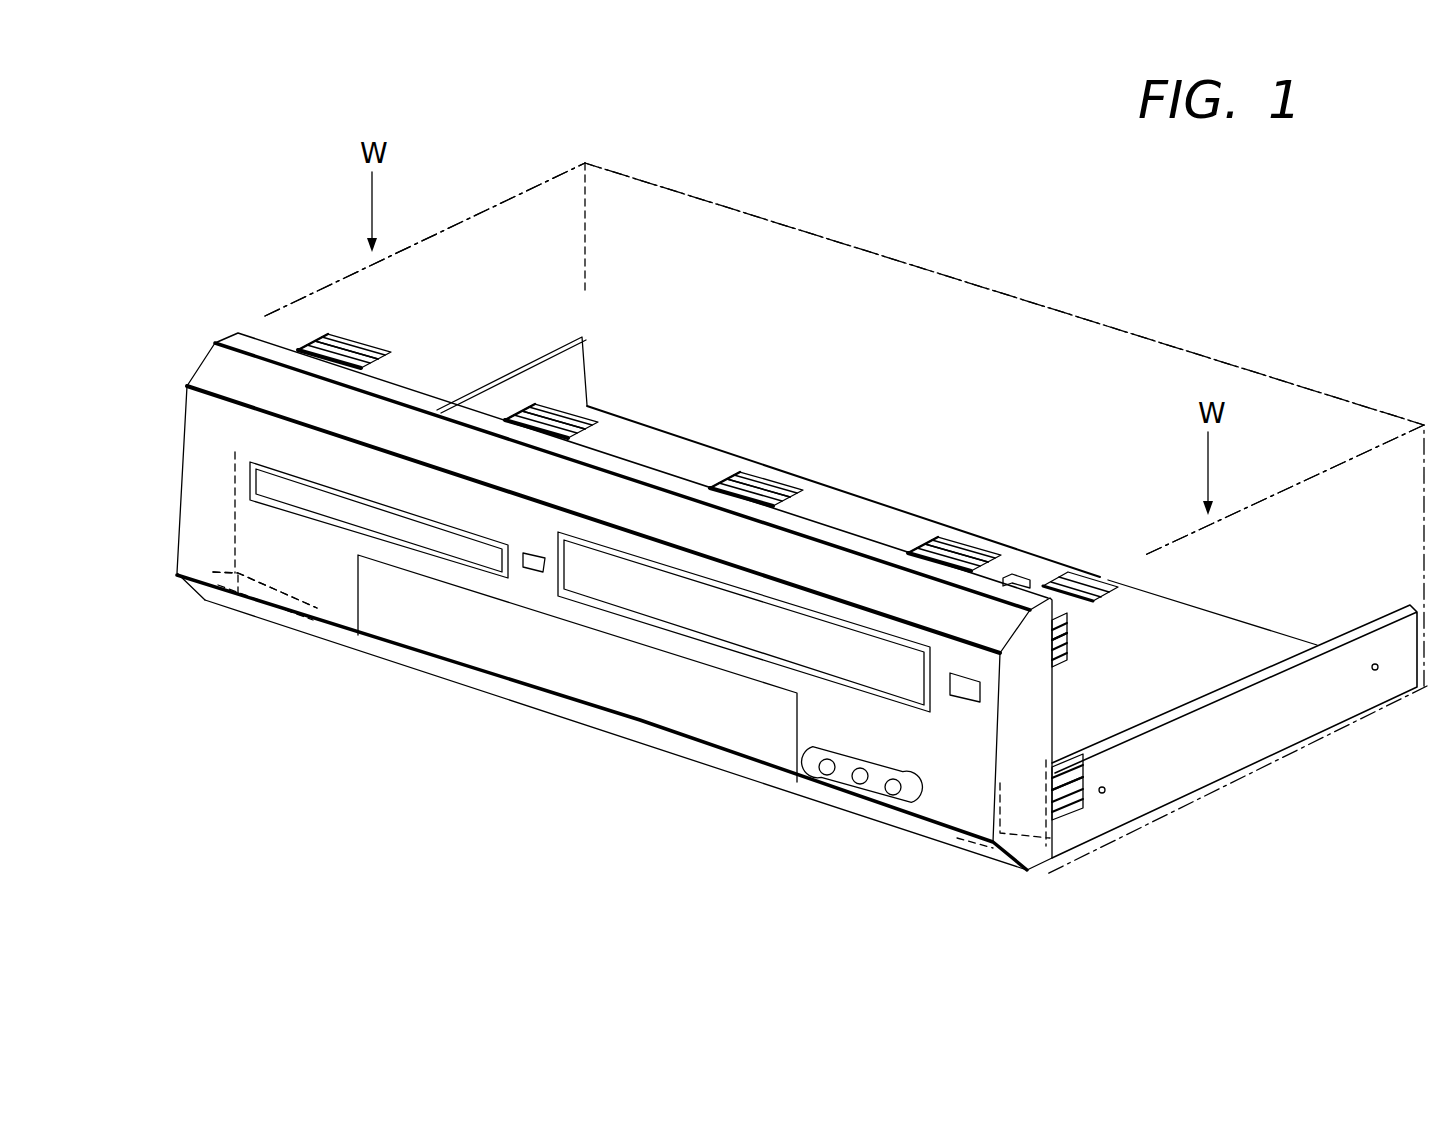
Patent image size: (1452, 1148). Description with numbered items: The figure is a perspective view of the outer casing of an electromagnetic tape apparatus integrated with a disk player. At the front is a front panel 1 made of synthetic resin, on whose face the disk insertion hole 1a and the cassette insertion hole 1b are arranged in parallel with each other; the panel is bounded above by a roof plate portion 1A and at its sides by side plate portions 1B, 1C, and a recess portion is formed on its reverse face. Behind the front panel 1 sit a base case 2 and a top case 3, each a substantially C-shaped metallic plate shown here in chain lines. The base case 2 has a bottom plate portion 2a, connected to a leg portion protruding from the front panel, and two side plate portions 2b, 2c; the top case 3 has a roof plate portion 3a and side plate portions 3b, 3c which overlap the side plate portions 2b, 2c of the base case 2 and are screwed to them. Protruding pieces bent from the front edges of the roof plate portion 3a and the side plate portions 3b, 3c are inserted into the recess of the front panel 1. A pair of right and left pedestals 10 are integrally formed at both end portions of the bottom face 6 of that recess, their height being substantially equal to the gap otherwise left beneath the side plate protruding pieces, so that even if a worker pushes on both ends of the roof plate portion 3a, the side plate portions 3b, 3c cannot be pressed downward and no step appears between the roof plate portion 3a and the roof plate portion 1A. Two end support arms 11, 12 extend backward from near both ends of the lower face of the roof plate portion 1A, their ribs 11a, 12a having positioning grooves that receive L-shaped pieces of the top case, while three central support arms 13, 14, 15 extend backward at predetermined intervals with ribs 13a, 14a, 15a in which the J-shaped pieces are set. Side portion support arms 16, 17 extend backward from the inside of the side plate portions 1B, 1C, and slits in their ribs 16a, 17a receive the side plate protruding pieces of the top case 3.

The front panel 1 is at (591, 579).
The roof plate portion 1A is at (657, 480).
The side plate portion 1B is at (208, 505).
The side plate portion 1C is at (1020, 727).
The disk insertion hole 1a is at (337, 528).
The cassette insertion hole 1b is at (680, 635).
The base case 2 is at (927, 573).
The bottom plate portion 2a is at (860, 508).
The side plate portion 2b is at (552, 347).
The side plate portion 2c is at (1220, 720).
The top case 3 is at (935, 266).
The roof plate portion 3a is at (1037, 337).
The side plate portion 3b is at (510, 253).
The side plate portion 3c is at (1307, 525).
The bottom face 6 is at (312, 625).
The pedestal 10 is at (238, 613).
The end support arm 11 is at (397, 352).
The rib 11a is at (370, 349).
The end support arm 12 is at (1090, 600).
The rib 12a is at (1078, 575).
The central support arm 13 is at (600, 434).
The rib 13a is at (570, 414).
The central support arm 14 is at (787, 500).
The rib 14a is at (760, 482).
The central support arm 15 is at (980, 566).
The rib 15a is at (948, 550).
The side portion support arm 16 is at (1056, 665).
The rib 16a is at (1068, 638).
The side portion support arm 17 is at (1083, 810).
The rib 17a is at (1093, 767).